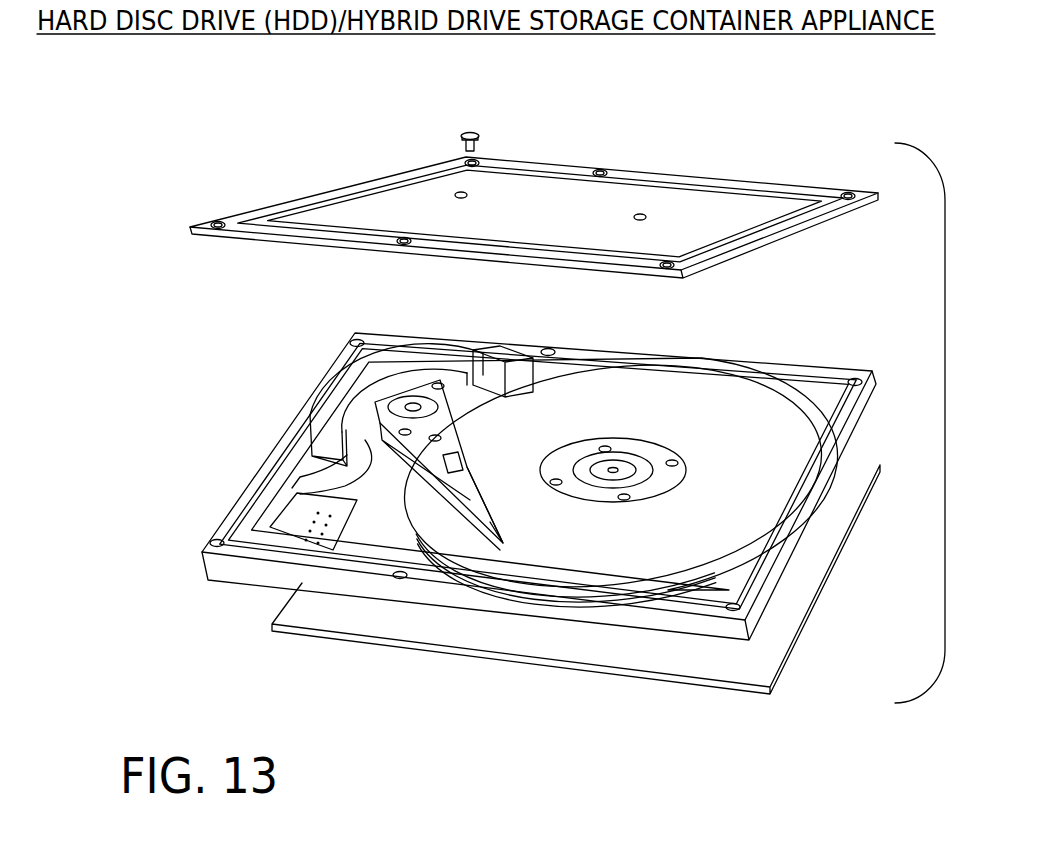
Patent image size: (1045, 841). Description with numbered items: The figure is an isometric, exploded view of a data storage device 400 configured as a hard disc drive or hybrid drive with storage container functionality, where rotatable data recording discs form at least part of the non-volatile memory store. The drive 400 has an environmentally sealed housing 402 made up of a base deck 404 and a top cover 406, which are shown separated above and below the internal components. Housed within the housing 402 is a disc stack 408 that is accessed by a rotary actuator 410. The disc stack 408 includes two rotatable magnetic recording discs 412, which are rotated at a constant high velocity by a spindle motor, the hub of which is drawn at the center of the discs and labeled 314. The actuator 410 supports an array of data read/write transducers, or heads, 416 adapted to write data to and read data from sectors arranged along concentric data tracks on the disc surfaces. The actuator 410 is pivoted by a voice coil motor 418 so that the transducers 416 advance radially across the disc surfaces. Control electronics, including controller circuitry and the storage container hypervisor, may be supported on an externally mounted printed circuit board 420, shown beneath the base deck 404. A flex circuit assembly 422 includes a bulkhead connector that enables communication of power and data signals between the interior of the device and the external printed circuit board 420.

The data storage device 400 is at (172, 109).
The housing 402 is at (246, 341).
The base deck 404 is at (806, 532).
The top cover 406 is at (640, 187).
The disc stack 408 is at (712, 390).
The rotary actuator 410 is at (480, 472).
The rotatable magnetic recording discs 412 is at (678, 596).
The spindle hub 314 is at (626, 465).
The data read/write transducers 416 is at (502, 532).
The voice coil motor 418 is at (423, 347).
The printed circuit board 420 is at (330, 640).
The flex circuit assembly 422 is at (315, 478).